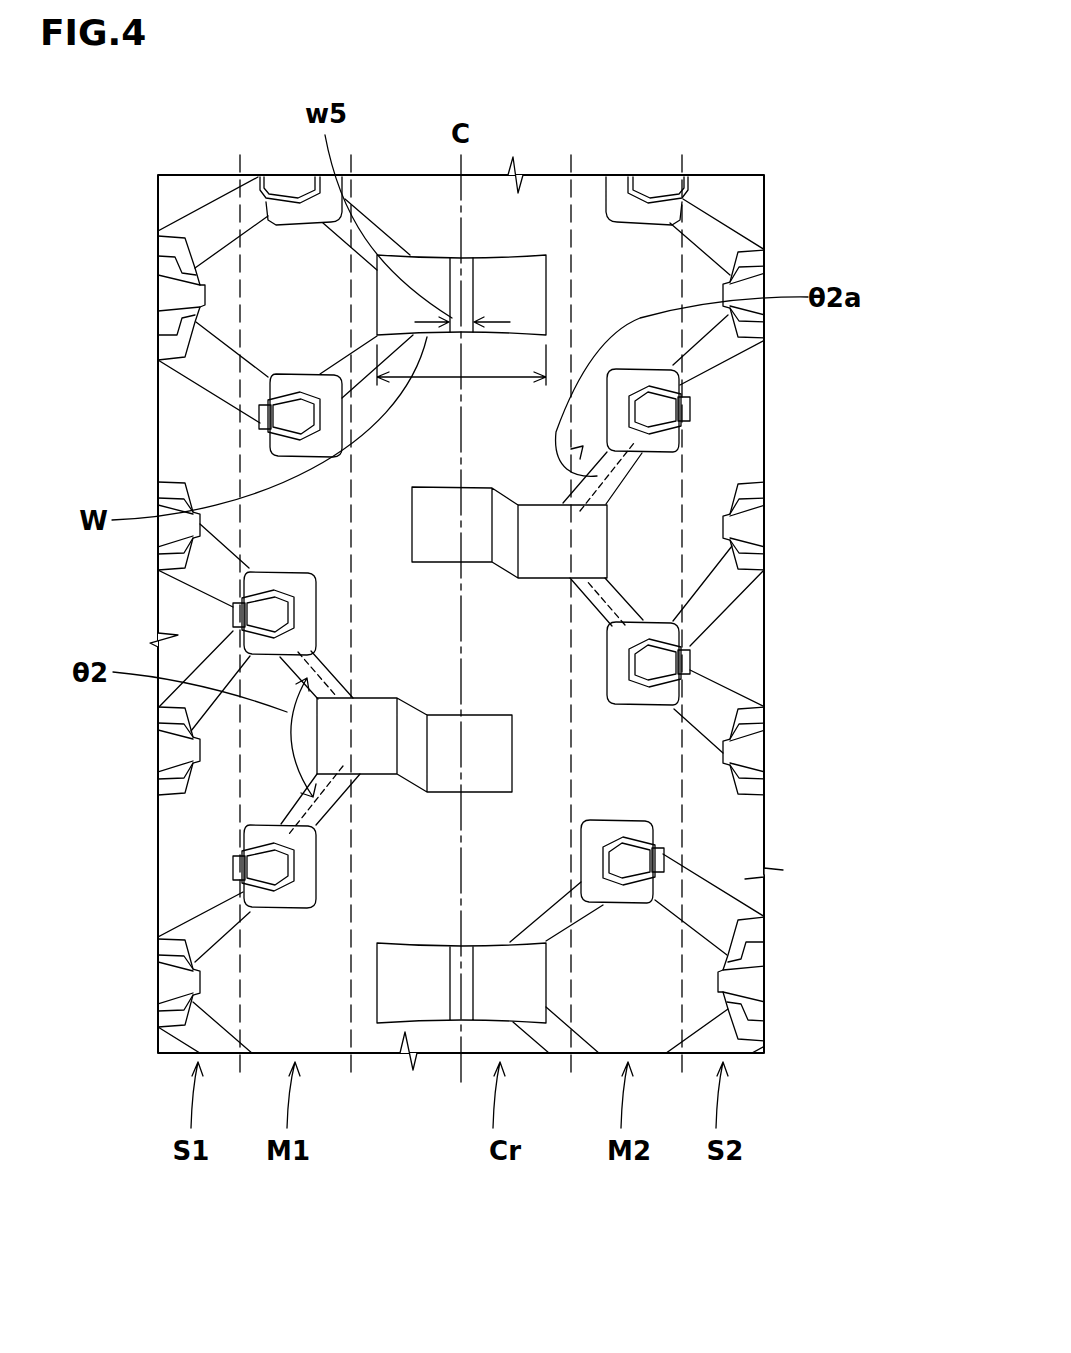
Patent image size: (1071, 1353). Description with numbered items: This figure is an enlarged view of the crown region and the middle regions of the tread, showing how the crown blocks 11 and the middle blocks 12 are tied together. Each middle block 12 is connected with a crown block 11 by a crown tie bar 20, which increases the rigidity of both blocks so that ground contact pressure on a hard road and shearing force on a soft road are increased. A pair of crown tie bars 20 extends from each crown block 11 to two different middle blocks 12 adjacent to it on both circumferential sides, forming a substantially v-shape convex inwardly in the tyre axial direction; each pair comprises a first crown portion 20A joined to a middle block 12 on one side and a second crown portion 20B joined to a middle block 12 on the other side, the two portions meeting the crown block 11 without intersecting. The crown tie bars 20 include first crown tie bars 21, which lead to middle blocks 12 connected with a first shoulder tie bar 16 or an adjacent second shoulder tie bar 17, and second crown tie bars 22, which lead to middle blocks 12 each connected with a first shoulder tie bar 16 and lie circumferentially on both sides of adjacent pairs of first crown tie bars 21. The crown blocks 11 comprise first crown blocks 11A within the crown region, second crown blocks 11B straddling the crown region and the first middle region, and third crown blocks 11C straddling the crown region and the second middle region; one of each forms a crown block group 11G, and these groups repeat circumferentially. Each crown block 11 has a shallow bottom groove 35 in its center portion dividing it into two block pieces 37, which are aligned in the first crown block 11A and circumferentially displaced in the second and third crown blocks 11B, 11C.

The crown block 11 is at (465, 561).
The first crown block 11A is at (646, 217).
The second crown block 11B is at (333, 749).
The third crown block 11C is at (587, 540).
The crown block group 11G is at (545, 779).
The middle block 12 is at (265, 838).
The first shoulder tie bar 16 is at (717, 353).
The second shoulder tie bar 17 is at (712, 597).
The crown tie bar 20 is at (287, 807).
The first crown portion 20A is at (733, 489).
The second crown portion 20B is at (602, 629).
The first crown tie bar 21 is at (622, 452).
The second crown tie bar 22 is at (363, 353).
The shallow bottom groove 35 is at (467, 272).
The block piece 37 is at (513, 282).